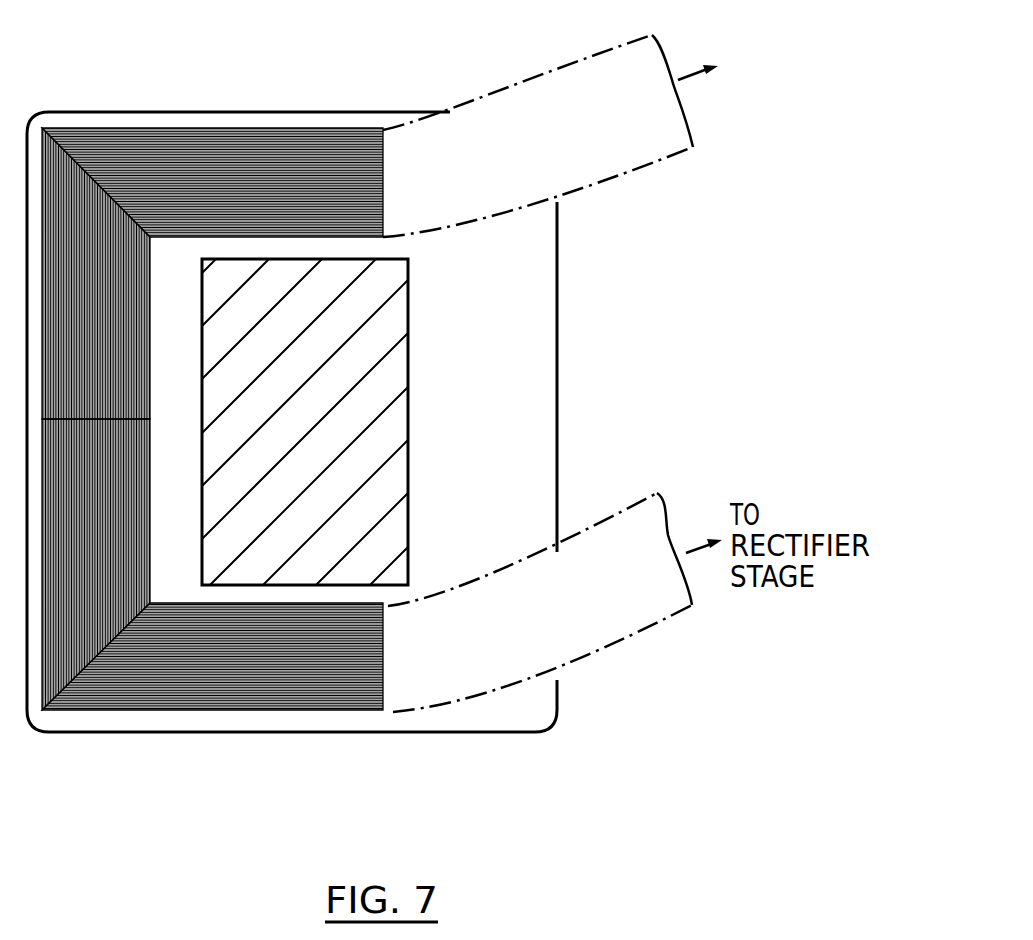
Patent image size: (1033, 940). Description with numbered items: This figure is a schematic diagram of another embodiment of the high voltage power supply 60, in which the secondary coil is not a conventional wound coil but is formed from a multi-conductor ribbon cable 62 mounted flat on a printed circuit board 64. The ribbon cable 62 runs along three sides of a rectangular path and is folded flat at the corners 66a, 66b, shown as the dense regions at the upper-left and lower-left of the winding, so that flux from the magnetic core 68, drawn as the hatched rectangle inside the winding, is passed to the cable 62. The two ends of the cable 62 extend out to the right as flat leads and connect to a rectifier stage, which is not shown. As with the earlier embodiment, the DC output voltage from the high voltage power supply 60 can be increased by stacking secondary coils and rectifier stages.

The high voltage power supply 60 is at (379, 90).
The multi-conductor ribbon cable 62 is at (459, 205).
The printed circuit board 64 is at (537, 452).
The upper winding portion 66a is at (92, 145).
The lower winding portion 66b is at (112, 700).
The magnetic core 68 is at (394, 394).